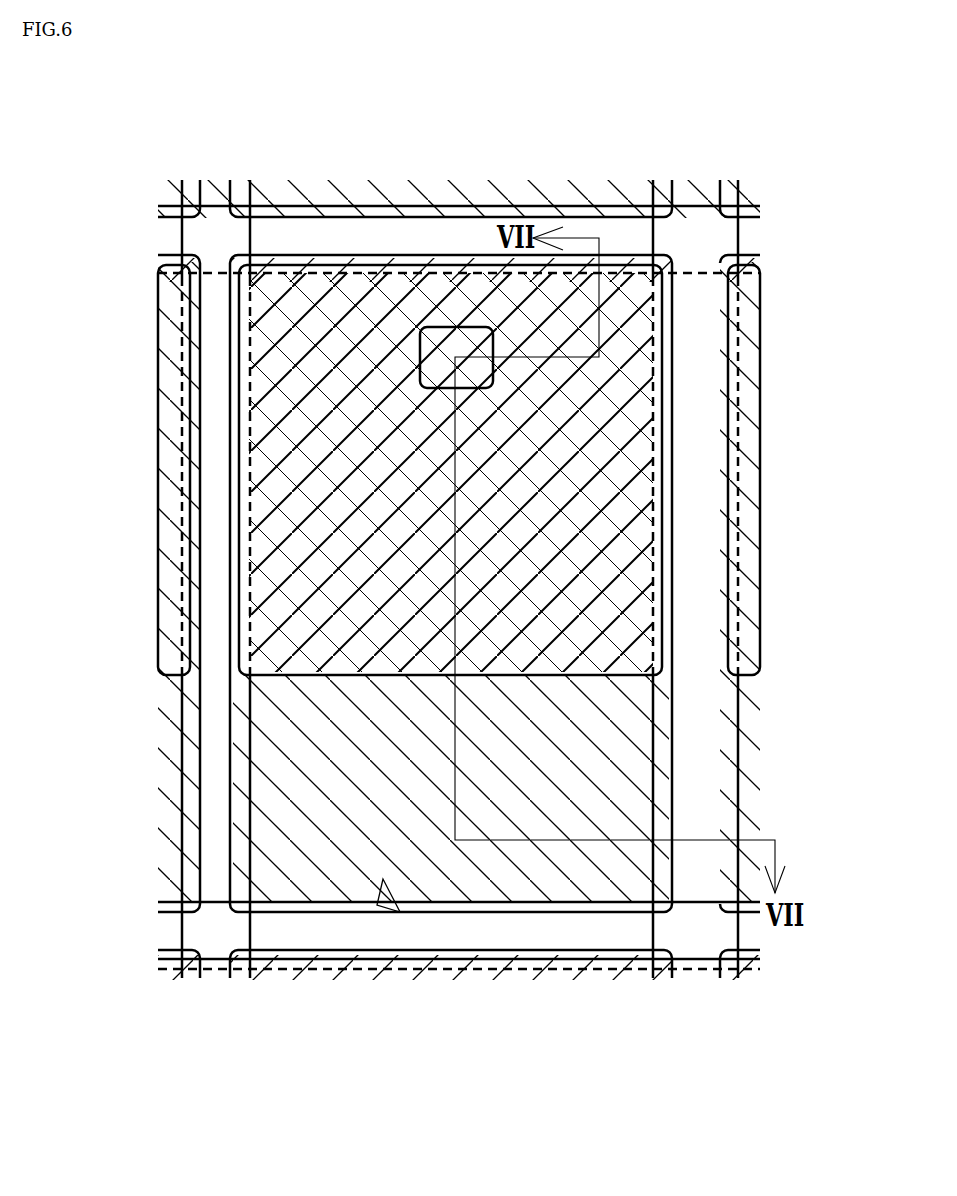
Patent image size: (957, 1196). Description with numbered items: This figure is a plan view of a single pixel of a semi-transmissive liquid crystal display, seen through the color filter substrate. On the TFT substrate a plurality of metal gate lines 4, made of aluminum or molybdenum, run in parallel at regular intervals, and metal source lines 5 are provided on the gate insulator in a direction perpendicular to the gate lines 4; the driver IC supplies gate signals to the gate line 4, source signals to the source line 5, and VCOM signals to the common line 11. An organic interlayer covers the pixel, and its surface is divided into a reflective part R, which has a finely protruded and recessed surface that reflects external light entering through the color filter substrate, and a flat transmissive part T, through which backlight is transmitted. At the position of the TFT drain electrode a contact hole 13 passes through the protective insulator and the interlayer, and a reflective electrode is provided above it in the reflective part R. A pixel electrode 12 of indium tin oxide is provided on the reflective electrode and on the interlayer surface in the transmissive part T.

The gate line 4 is at (626, 233).
The source line 5 is at (693, 339).
The common line 11 is at (618, 421).
The pixel electrode 12 is at (352, 815).
The contact hole 13 is at (442, 326).
The reflective part R is at (322, 272).
The transmissive part T is at (383, 880).